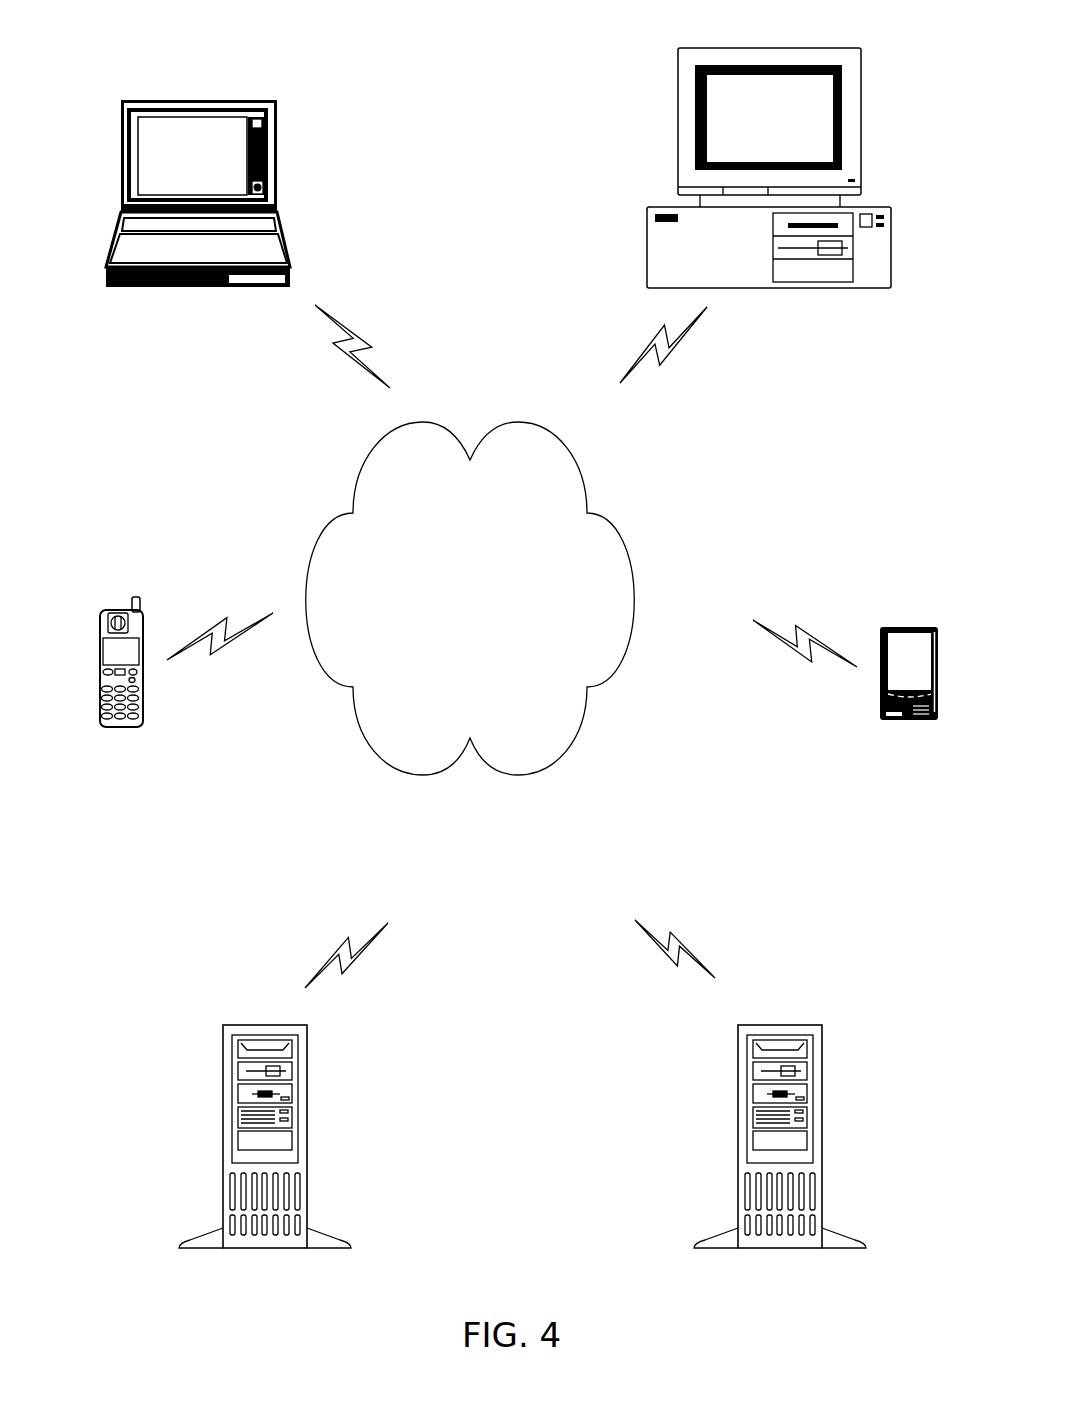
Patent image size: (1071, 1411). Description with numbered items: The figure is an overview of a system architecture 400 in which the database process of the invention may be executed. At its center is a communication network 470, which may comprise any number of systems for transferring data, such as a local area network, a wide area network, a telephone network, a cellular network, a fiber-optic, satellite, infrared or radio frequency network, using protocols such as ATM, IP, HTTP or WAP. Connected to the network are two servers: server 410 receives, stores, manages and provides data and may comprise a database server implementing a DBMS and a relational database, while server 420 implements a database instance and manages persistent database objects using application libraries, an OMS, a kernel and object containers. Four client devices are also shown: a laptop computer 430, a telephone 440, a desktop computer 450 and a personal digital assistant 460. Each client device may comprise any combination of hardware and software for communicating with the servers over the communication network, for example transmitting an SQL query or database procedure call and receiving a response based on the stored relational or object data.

The system architecture 400 is at (352, 54).
The server 410 is at (309, 1137).
The server 420 is at (824, 1136).
The client device 430 is at (117, 143).
The client device 440 is at (115, 727).
The client device 450 is at (892, 228).
The client device 460 is at (910, 723).
The communication network 470 is at (422, 422).